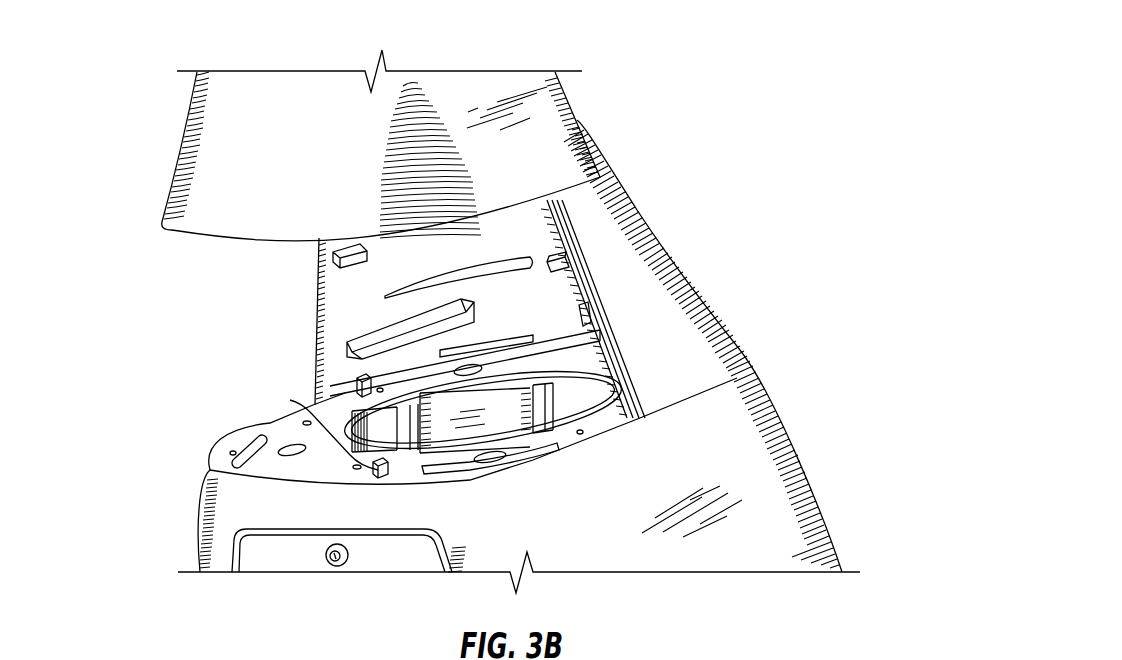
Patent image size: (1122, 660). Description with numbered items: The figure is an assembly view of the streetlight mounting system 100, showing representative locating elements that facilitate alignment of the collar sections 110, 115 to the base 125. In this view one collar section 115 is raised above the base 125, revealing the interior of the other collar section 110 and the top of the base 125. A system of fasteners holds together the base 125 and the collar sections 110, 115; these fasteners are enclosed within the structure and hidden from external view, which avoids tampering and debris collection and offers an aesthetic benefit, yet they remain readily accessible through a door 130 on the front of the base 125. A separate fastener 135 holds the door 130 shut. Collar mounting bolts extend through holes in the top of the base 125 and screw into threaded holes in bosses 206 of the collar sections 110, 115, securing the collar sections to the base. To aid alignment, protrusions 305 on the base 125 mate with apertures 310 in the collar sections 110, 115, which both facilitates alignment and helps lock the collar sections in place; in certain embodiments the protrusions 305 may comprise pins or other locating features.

The streetlight mounting system 100 is at (767, 74).
The collar section 115 is at (196, 141).
The collar section 110 is at (655, 248).
The base 125 is at (779, 447).
The boss 206 is at (382, 335).
The aperture 310 is at (358, 379).
The protrusion 305 is at (293, 400).
The door 130 is at (395, 560).
The fastener 135 is at (333, 566).